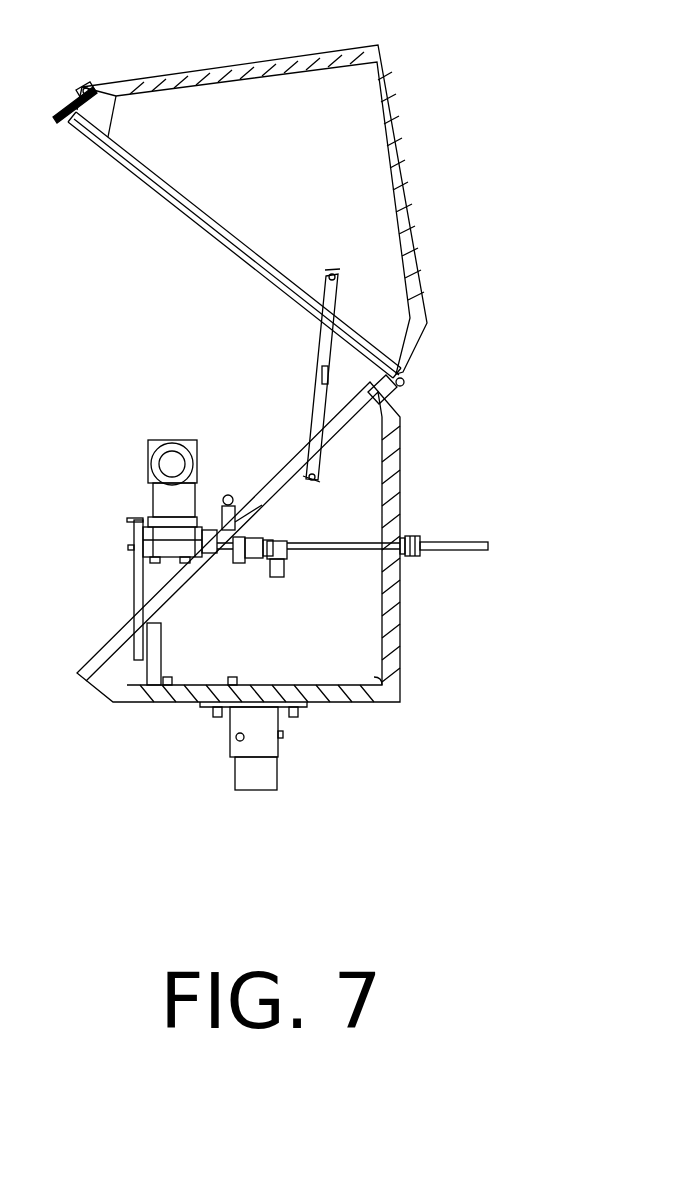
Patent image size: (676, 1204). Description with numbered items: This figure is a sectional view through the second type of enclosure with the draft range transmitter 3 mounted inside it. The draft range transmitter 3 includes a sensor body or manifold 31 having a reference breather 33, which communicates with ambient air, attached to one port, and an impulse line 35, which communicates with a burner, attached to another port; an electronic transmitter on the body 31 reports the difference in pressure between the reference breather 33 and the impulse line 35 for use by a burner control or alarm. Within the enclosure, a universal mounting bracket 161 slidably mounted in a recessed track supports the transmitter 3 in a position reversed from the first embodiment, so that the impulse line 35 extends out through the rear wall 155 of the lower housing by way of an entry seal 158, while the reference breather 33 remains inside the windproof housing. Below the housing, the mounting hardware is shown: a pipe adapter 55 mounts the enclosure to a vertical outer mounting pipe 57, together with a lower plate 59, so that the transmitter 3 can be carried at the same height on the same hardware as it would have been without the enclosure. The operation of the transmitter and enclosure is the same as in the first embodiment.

The draft range transmitter 3 is at (178, 470).
The sensor body 31 is at (207, 525).
The reference breather 33 is at (284, 576).
The impulse line 35 is at (462, 546).
The pipe adapter 55 is at (242, 724).
The vertical outer mounting pipe 57 is at (265, 782).
The lower plate 59 is at (205, 713).
The rear wall 155 is at (398, 627).
The entry seal 158 is at (402, 534).
The universal mounting bracket 161 is at (138, 590).